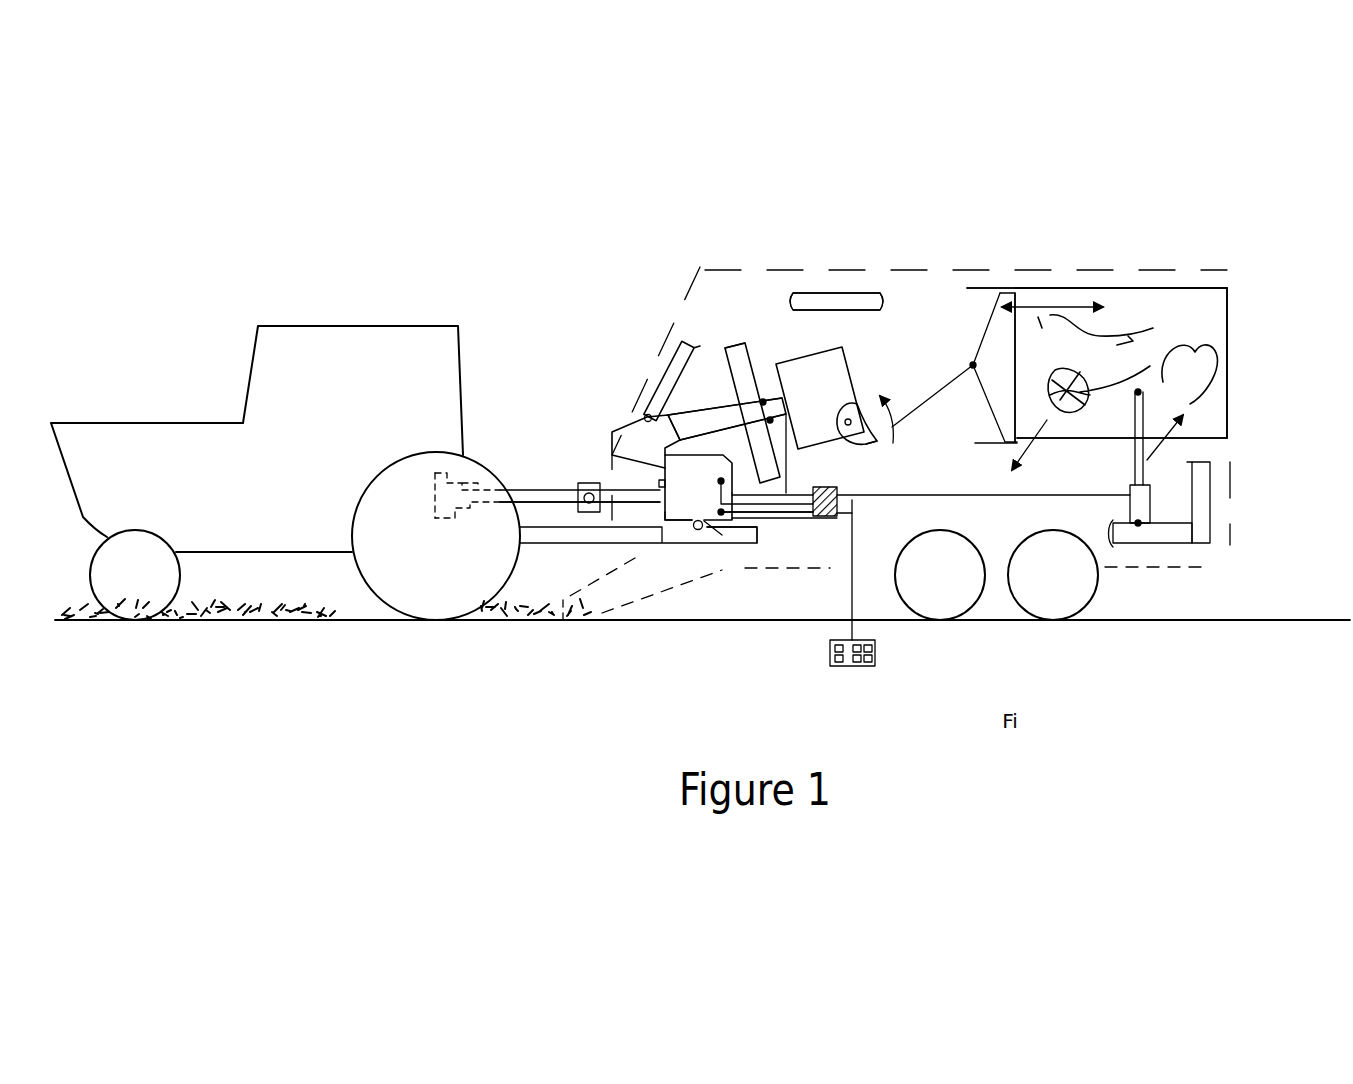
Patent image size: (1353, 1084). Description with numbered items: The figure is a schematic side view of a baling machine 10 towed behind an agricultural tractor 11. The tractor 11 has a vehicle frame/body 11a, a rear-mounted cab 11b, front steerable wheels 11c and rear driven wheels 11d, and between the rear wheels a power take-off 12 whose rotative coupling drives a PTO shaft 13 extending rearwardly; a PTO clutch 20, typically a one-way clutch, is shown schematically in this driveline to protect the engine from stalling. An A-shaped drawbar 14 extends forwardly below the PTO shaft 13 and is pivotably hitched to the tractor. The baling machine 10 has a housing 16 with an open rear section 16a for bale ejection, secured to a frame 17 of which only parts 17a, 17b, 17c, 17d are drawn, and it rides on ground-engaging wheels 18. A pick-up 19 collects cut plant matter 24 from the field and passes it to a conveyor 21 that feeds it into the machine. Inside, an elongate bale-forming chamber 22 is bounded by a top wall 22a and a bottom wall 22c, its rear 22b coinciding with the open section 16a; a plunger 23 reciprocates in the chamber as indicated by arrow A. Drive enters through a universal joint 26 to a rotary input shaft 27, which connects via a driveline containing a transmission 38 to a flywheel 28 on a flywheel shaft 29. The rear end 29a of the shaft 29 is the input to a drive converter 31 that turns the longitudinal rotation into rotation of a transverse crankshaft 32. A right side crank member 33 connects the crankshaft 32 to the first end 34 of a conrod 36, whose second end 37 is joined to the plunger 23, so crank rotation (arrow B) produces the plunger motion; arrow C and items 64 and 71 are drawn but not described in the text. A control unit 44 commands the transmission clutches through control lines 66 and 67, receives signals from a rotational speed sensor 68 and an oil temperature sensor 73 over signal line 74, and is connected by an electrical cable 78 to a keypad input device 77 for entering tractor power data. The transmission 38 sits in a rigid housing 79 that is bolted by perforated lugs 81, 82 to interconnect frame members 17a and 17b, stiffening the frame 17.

The baling machine 10 is at (1168, 267).
The agricultural tractor 11 is at (397, 316).
The vehicle frame/body 11a is at (157, 448).
The rear-mounted cab 11b is at (302, 352).
The front steerable ground-engaging wheels 11c is at (135, 593).
The rear driven ground-engaging wheels 11d is at (433, 606).
The power take-off 12 is at (435, 473).
The PTO shaft 13 is at (525, 490).
The drawbar 14 is at (535, 537).
The housing or cover 16 is at (915, 268).
The open housing section 16a is at (1228, 305).
The baling machine frame 17 is at (868, 297).
The frame member 17a is at (680, 538).
The frame member 17b is at (680, 362).
The frame part 17c is at (817, 298).
The frame part 17d is at (1200, 505).
The ground-engaging wheels 18 is at (935, 593).
The pick-up 19 is at (560, 620).
The PTO clutch 20 is at (470, 515).
The conveyor 21 is at (602, 593).
The bale-forming chamber 22 is at (1213, 290).
The top wall 22a is at (1090, 290).
The rear of bale-forming chamber 22b is at (1228, 340).
The bottom wall 22c is at (1215, 437).
The plunger 23 is at (995, 335).
The cut plant matter 24 is at (270, 620).
The universal joint 26 is at (588, 485).
The rotary input shaft 27 is at (630, 497).
The flywheel 28 is at (733, 343).
The flywheel shaft 29 is at (727, 417).
The rear end of flywheel shaft 29a is at (762, 397).
The drive converter 31 is at (793, 377).
The crankshaft 32 is at (852, 400).
The right side crank member 33 is at (857, 443).
The first end of conrod 34 is at (873, 440).
The right side conrod 36 is at (945, 385).
The second end of conrod 37 is at (971, 378).
The transmission 38 is at (640, 437).
The control unit 44 is at (848, 512).
The hydraulic cylinder 64 is at (1142, 508).
The electrical control signal line 66 is at (773, 520).
The control line 67 is at (738, 480).
The rotational speed sensor 68 is at (653, 513).
The crank 71 is at (765, 400).
The oil temperature sensor 73 is at (693, 503).
The electric signal line 74 is at (698, 531).
The input device 77 is at (830, 652).
The electrical cable 78 is at (855, 593).
The rigid housing 79 is at (698, 455).
The perforated lug 81 is at (702, 537).
The perforated lug 82 is at (647, 403).
The arrow A is at (1030, 298).
The arrow B is at (890, 430).
The direction C is at (1105, 449).